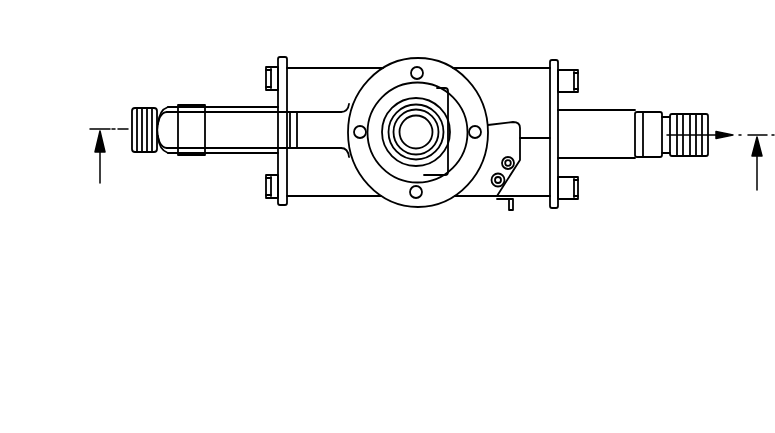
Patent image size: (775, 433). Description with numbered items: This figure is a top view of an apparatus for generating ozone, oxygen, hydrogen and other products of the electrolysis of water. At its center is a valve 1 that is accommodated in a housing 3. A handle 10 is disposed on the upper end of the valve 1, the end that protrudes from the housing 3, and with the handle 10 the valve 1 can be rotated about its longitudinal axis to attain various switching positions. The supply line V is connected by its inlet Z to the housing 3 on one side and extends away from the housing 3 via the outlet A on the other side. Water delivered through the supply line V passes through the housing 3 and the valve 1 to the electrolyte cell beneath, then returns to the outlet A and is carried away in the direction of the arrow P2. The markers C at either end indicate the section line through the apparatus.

The valve 1 is at (439, 94).
The housing 3 is at (325, 85).
The handle 10 is at (228, 123).
The inlet Z is at (138, 108).
The outlet A is at (615, 140).
The supply line V is at (612, 100).
The direction of the arrow P2 is at (720, 121).
The section line C- C is at (427, 176).